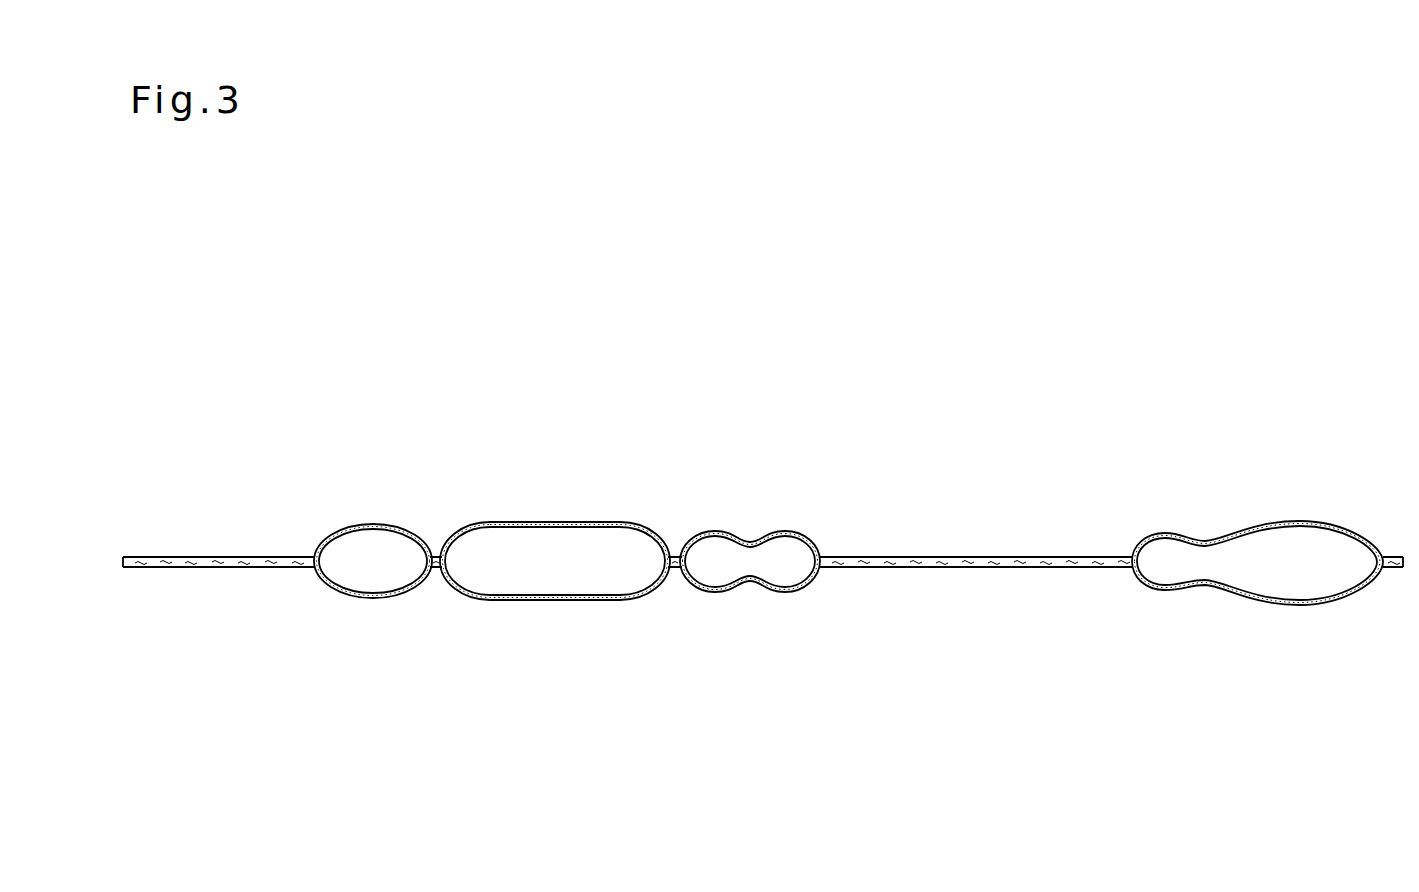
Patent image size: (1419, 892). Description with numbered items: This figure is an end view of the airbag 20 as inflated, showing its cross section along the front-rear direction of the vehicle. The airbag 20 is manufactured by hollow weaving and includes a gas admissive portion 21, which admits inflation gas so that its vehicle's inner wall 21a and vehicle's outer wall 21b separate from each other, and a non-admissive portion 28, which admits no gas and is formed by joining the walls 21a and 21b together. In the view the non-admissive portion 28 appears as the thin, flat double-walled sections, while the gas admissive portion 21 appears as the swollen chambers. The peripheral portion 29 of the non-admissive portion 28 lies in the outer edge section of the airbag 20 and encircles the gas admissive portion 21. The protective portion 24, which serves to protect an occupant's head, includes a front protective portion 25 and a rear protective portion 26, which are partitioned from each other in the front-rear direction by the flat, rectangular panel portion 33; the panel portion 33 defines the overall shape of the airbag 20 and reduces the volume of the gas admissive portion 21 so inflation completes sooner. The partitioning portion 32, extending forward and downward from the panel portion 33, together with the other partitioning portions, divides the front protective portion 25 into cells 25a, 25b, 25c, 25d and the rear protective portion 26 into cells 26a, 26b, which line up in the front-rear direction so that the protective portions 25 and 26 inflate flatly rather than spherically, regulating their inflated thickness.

The airbag 20 is at (268, 300).
The gas admissive portion 21 is at (302, 590).
The vehicle's inner wall 21a is at (358, 596).
The vehicle's outer wall 21b is at (363, 526).
The protective portion 24 is at (1062, 720).
The front protective portion 25 is at (830, 593).
The cell 25a is at (392, 580).
The cell 25b is at (565, 578).
The cell 25c is at (705, 580).
The cell 25d is at (785, 580).
The rear protective portion 26 is at (1130, 596).
The cell 26a is at (1170, 570).
The cell 26b is at (1277, 572).
The non-admissive portion 28 is at (290, 358).
The peripheral portion 29 is at (270, 556).
The partitioning portion 32 is at (432, 556).
The panel portion 33 is at (905, 555).